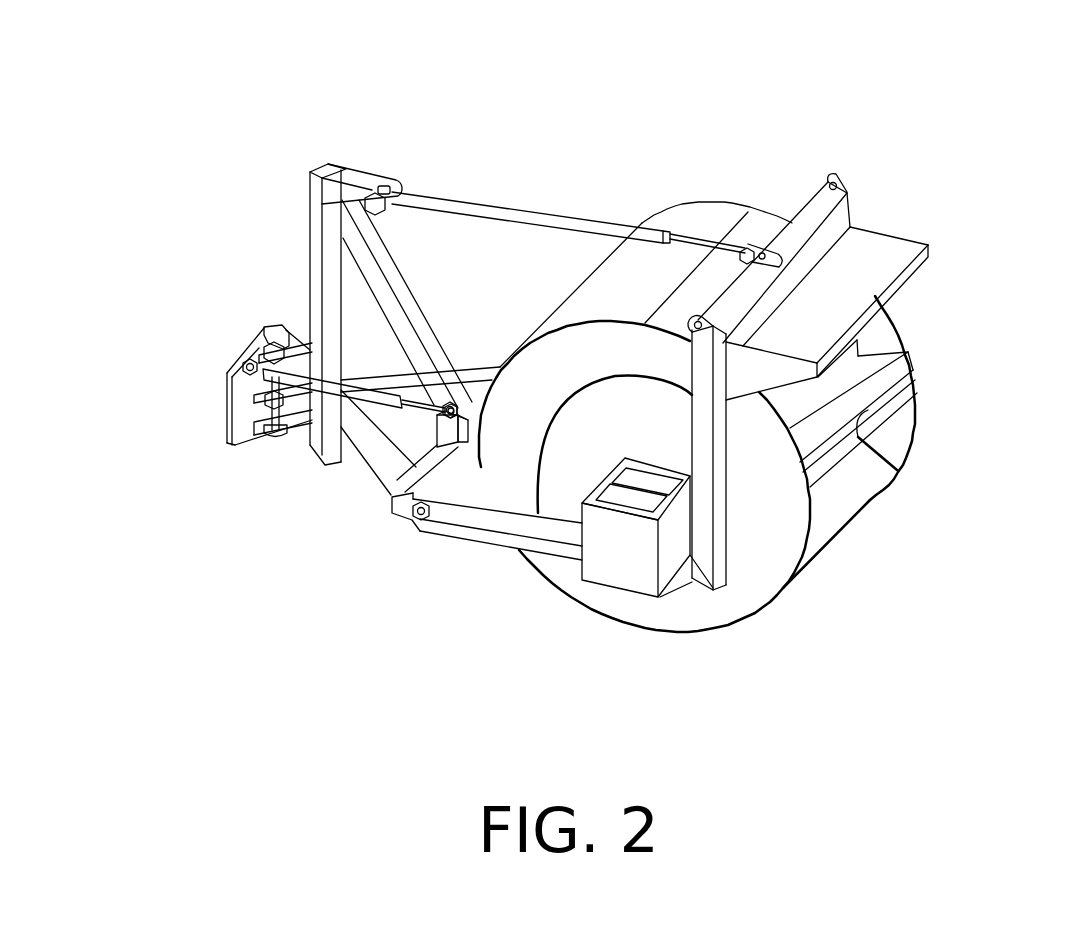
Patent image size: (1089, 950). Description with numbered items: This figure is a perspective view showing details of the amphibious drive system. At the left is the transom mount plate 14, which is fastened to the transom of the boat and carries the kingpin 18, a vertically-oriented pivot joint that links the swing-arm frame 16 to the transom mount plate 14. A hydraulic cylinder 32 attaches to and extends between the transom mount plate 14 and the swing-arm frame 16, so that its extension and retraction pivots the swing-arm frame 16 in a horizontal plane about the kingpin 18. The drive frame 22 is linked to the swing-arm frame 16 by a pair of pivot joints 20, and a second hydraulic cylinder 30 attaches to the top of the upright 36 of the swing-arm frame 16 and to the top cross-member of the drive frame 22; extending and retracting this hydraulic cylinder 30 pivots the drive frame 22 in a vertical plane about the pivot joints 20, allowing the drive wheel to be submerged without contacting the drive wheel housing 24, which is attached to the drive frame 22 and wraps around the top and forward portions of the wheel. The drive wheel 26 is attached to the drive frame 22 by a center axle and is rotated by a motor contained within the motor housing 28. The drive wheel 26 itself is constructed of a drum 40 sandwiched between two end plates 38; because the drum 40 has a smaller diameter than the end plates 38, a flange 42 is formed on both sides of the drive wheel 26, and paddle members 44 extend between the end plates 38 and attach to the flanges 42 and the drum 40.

The transom mount plate 14 is at (178, 415).
The swing-arm frame 16 is at (418, 224).
The kingpin 18 is at (200, 278).
The pivot joints 20 is at (397, 581).
The drive frame 22 is at (768, 195).
The drive wheel housing 24 is at (888, 240).
The drive wheel 26 is at (644, 533).
The motor housing 28 is at (563, 585).
The hydraulic cylinder 30 is at (587, 153).
The hydraulic cylinder 32 is at (275, 486).
The upright 36 is at (276, 271).
The end plates 38 is at (714, 461).
The drum 40 is at (875, 410).
The flange 42 is at (924, 435).
The paddle members 44 is at (828, 410).